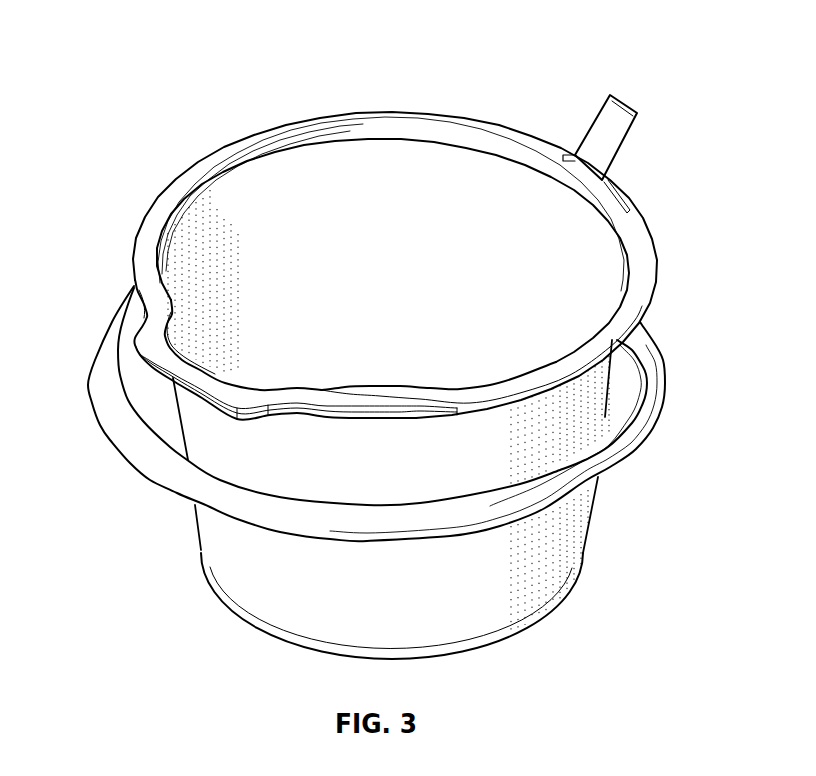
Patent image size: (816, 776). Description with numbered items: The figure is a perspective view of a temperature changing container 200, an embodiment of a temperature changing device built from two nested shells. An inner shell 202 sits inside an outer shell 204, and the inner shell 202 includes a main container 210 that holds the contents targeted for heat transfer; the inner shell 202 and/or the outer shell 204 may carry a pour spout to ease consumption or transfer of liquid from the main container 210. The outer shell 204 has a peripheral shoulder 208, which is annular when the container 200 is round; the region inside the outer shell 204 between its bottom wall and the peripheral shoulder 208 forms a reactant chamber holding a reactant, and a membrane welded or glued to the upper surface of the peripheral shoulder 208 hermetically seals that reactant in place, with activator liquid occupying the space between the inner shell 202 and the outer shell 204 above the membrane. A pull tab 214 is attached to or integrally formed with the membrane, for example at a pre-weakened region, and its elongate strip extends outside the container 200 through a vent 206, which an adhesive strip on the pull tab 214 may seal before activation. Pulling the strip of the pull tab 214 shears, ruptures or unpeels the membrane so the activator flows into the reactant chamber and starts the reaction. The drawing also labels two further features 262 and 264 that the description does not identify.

The temperature changing container 200 is at (150, 68).
The inner shell 202 is at (365, 469).
The outer shell 204 is at (321, 613).
The vent 206 is at (567, 148).
The peripheral shoulder 208 is at (250, 621).
The main container 210 is at (418, 280).
The pull tab 214 is at (612, 137).
The upper rim ring 262 is at (137, 237).
The lower ring 264 is at (119, 427).